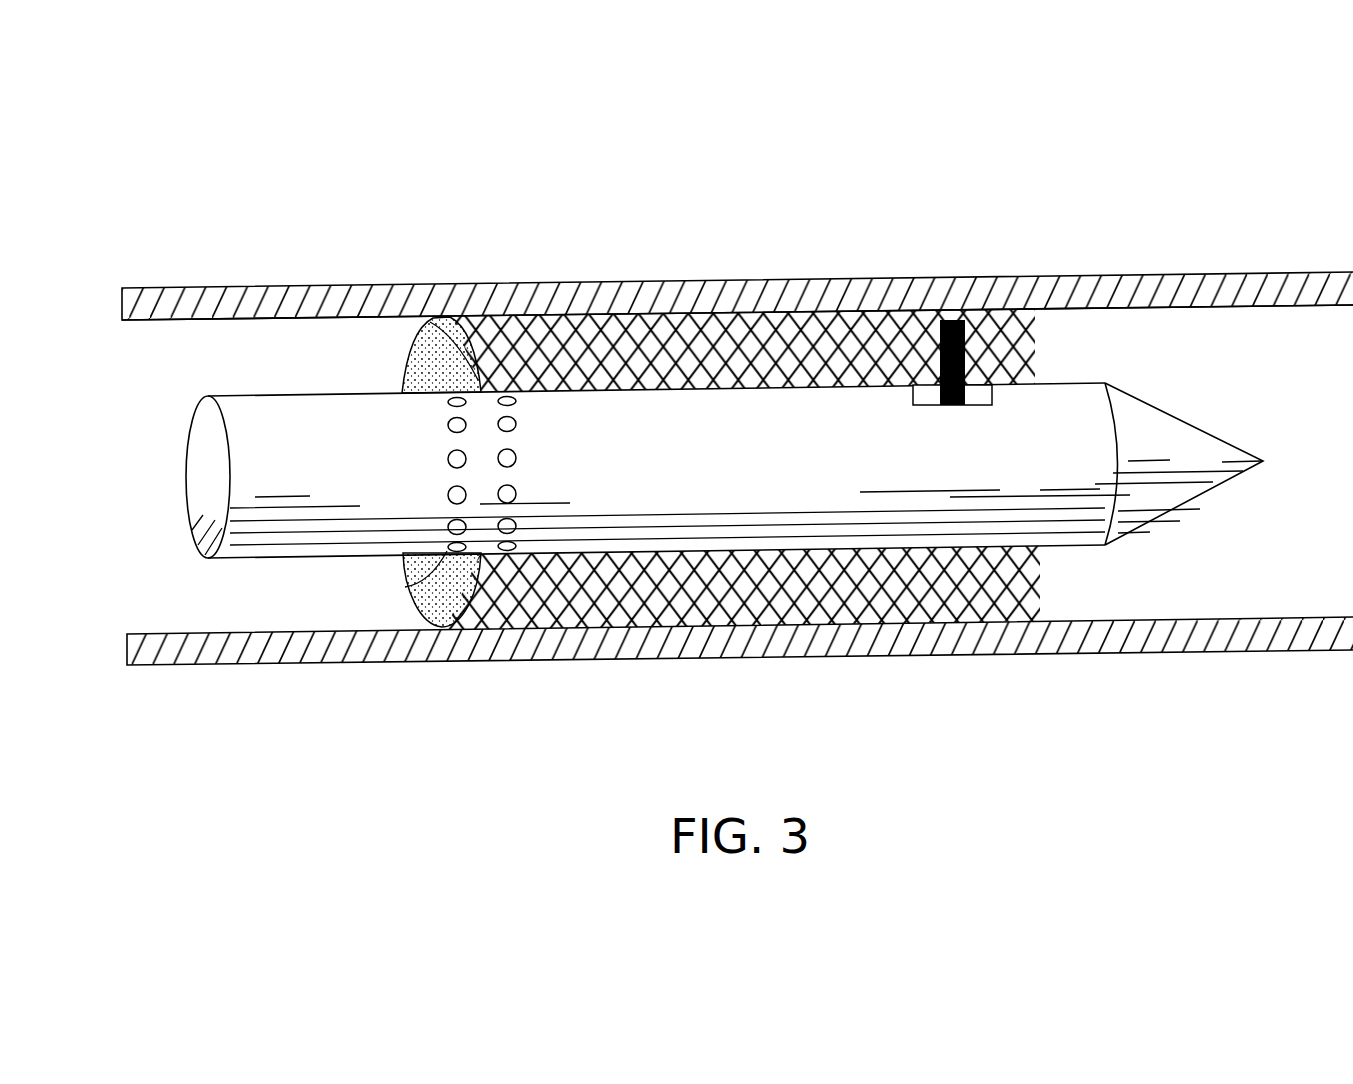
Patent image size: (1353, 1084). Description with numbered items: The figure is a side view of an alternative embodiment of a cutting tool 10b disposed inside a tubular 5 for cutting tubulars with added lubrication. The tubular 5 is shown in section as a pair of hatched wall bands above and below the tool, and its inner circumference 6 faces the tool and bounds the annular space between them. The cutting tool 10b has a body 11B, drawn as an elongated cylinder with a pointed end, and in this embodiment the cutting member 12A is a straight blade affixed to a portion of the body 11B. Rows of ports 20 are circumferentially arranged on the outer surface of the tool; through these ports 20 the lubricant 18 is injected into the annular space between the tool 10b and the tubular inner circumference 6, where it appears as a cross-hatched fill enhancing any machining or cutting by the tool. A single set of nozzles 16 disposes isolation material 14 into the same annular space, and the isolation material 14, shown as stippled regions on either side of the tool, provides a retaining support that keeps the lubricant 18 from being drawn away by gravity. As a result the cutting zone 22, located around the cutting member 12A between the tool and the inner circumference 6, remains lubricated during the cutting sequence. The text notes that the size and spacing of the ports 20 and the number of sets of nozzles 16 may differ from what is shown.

The tubular 5 is at (252, 287).
The inner circumference 6 is at (167, 320).
The cutting tool 10b is at (128, 497).
The body 11B is at (1170, 412).
The cutting member 12A is at (978, 339).
The isolation material 14 is at (410, 344).
The nozzles 16 is at (418, 586).
The lubricant 18 is at (543, 342).
The ports 20 is at (509, 551).
The cutting zone 22 is at (913, 368).